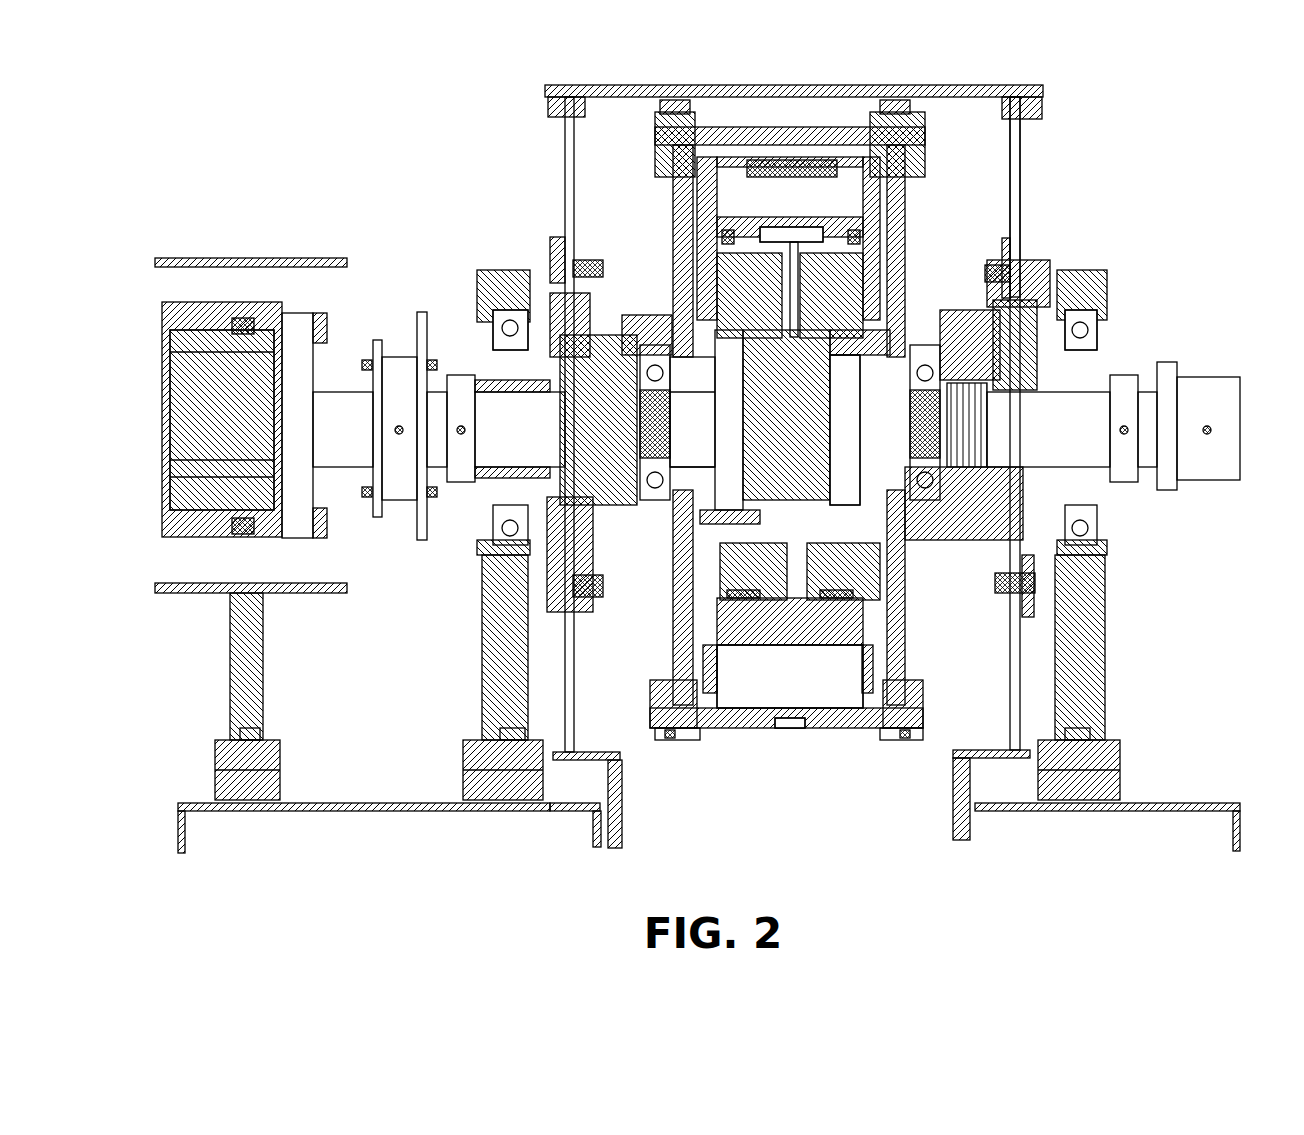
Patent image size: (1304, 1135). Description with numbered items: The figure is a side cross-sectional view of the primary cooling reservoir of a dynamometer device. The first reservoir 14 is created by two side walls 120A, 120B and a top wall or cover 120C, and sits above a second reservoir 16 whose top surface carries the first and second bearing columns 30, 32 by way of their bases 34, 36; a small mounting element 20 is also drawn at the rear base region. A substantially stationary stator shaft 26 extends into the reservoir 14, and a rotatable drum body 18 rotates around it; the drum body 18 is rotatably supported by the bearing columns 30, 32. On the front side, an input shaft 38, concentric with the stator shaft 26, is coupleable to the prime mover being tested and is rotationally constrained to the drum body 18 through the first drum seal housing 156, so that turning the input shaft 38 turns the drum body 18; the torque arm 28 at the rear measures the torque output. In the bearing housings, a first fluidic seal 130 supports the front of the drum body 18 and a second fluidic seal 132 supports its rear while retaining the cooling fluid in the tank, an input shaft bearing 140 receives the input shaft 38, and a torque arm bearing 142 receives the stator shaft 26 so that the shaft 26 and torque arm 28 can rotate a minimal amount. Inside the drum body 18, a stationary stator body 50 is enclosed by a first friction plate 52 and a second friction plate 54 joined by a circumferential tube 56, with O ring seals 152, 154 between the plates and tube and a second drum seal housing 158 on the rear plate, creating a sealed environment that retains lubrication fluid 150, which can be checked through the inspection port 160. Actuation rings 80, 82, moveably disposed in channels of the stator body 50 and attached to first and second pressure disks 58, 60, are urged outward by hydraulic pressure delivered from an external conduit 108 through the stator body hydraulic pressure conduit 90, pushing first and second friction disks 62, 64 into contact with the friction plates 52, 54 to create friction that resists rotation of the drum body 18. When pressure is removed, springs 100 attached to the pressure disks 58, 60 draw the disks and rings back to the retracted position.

The first reservoir 14 is at (1013, 163).
The second reservoir 16 is at (1238, 813).
The rotatable drum body 18 is at (645, 232).
The mounting bracket 20 is at (960, 800).
The stator shaft 26 is at (703, 400).
The torque arm 28 is at (1227, 412).
The first bearing column 30 is at (483, 662).
The second bearing column 32 is at (1097, 678).
The base 34 is at (467, 762).
The base 36 is at (1107, 767).
The input shaft 38 is at (335, 410).
The stator body 50 is at (815, 650).
The first friction plate 52 is at (677, 660).
The second friction plate 54 is at (897, 658).
The circumferential body 56 is at (722, 717).
The first pressure disk 58 is at (707, 647).
The second pressure disk 60 is at (863, 645).
The first friction disk 62 is at (703, 648).
The second friction disk 64 is at (877, 650).
The first actuation ring 80 is at (727, 597).
The second actuation ring 82 is at (853, 597).
The stator body hydraulic pressure conduit 90 is at (788, 240).
The spring 100 is at (790, 170).
The external conduit 108 is at (857, 370).
The side wall 120A is at (565, 193).
The side wall 120B is at (1013, 212).
The top wall 120C is at (932, 92).
The first fluidic seal 130 is at (520, 429).
The second fluidic seal 132 is at (1010, 350).
The input shaft bearing 140 is at (460, 392).
The torque arm bearing 142 is at (1120, 390).
The lubrication fluid 150 is at (817, 697).
The fluidic seal 152 is at (687, 148).
The fluidic seal 154 is at (687, 148).
The first drum seal housing 156 is at (612, 357).
The second drum seal housing 158 is at (953, 497).
The inspection port 160 is at (1003, 470).